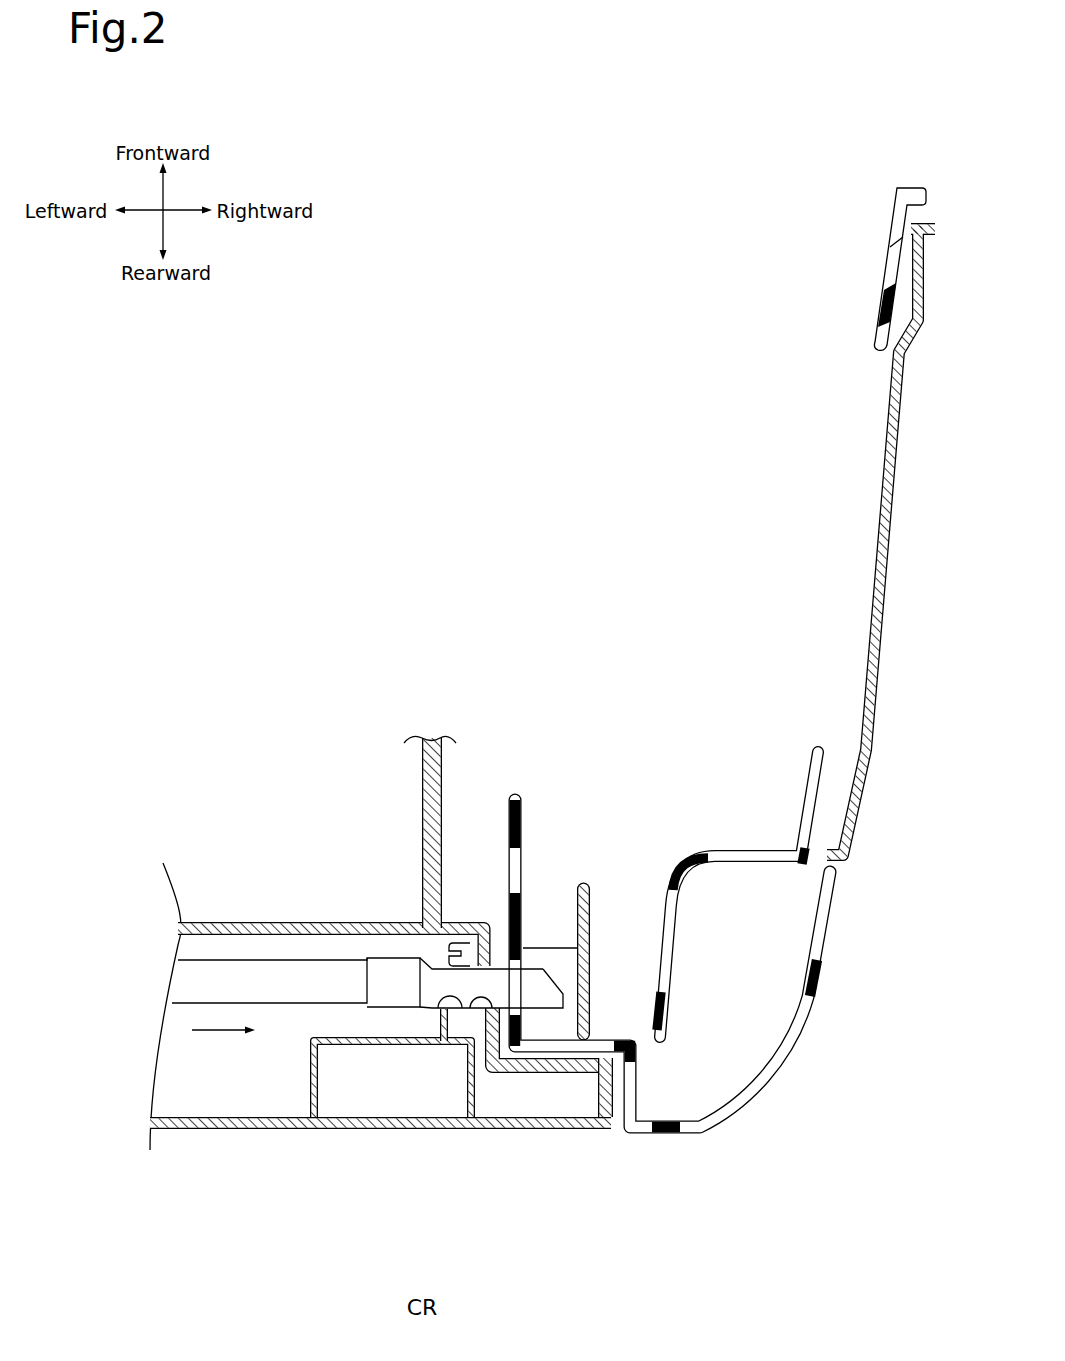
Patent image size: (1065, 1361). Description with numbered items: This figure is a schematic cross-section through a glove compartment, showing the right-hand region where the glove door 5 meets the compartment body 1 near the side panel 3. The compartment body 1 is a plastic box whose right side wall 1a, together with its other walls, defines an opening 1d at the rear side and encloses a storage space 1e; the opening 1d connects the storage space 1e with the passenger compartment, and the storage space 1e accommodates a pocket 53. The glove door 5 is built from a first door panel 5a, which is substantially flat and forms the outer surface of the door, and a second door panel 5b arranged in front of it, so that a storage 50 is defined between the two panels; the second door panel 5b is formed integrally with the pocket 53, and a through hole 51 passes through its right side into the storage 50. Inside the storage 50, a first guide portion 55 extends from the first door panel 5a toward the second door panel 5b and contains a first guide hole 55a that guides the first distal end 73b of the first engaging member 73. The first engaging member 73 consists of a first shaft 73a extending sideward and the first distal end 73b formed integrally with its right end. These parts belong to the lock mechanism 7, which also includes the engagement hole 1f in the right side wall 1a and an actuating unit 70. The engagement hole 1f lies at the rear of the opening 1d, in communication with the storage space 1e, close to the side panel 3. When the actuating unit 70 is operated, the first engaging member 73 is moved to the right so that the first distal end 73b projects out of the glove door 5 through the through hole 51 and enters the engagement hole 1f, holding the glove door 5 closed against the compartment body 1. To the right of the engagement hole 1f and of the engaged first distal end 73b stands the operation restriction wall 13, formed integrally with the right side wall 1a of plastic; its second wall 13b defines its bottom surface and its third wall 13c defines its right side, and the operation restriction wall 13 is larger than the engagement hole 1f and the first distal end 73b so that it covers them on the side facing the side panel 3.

The compartment body 1 is at (763, 1107).
The right side wall 1a is at (707, 1125).
The opening 1d is at (590, 1130).
The storage space 1e is at (488, 867).
The engagement hole 1f is at (527, 1008).
The side panel 3 is at (880, 462).
The glove door 5 is at (380, 1116).
The first door panel 5a is at (207, 1130).
The second door panel 5b is at (472, 933).
The lock mechanism 7 is at (555, 955).
The operation restriction wall 13 is at (604, 905).
The second wall 13b is at (557, 1023).
The third wall 13c is at (586, 935).
The storage 50 is at (211, 1067).
The through hole 51 is at (473, 998).
The pocket 53 is at (414, 832).
The first guide portion 55 is at (310, 1071).
The first guide hole 55a is at (440, 992).
The actuating unit 70 is at (328, 944).
The first engaging member 73 is at (207, 962).
The first shaft 73a is at (265, 977).
The first distal end 73b is at (552, 1002).